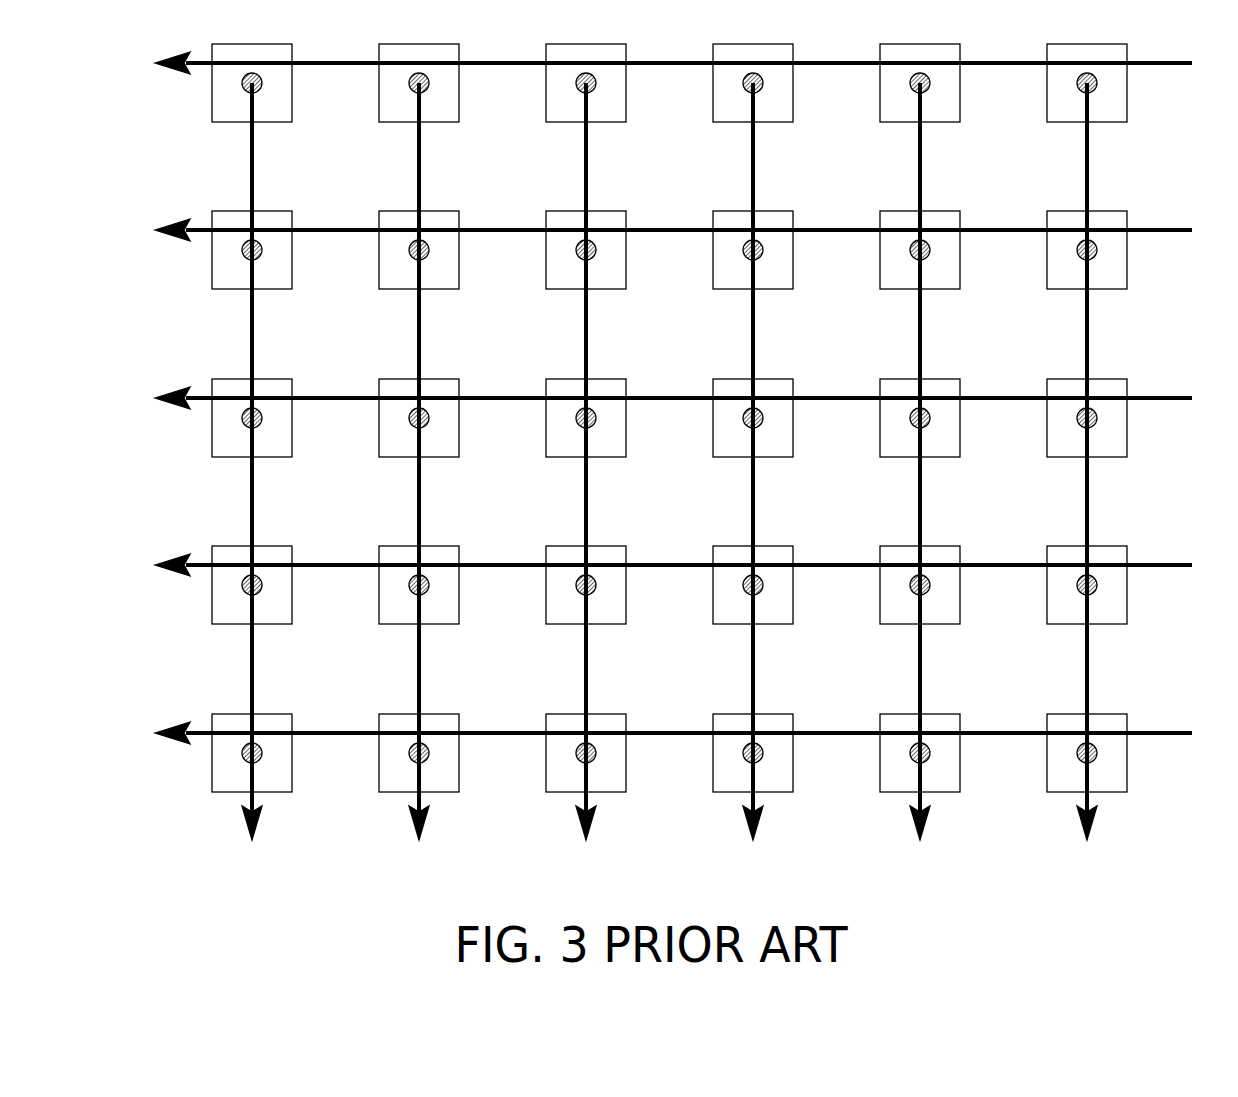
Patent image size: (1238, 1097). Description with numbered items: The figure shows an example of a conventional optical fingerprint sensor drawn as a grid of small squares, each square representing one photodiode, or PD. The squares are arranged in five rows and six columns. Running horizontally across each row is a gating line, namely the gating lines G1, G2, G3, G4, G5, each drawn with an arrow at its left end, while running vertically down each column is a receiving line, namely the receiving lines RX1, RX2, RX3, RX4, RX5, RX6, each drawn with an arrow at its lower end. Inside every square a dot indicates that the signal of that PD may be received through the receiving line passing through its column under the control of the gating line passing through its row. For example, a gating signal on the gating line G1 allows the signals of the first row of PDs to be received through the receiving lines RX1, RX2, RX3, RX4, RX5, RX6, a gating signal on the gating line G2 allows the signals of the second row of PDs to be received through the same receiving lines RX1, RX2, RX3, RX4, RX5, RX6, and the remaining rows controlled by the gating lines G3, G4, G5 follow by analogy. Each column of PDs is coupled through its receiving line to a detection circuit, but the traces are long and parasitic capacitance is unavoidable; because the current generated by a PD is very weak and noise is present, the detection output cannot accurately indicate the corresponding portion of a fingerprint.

The gating line G1 is at (652, 65).
The gating line G2 is at (652, 232).
The gating line G3 is at (652, 400).
The gating line G4 is at (652, 567).
The gating line G5 is at (652, 735).
The receiving line RX1 is at (256, 481).
The receiving line RX2 is at (423, 481).
The receiving line RX3 is at (590, 481).
The receiving line RX4 is at (757, 481).
The receiving line RX5 is at (924, 481).
The receiving line RX6 is at (1091, 481).